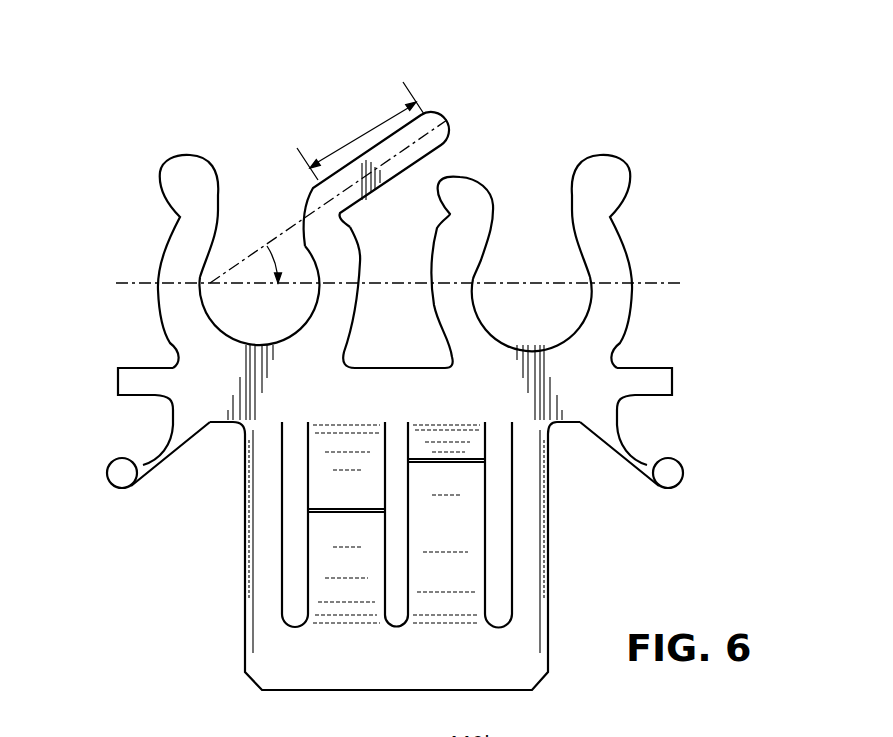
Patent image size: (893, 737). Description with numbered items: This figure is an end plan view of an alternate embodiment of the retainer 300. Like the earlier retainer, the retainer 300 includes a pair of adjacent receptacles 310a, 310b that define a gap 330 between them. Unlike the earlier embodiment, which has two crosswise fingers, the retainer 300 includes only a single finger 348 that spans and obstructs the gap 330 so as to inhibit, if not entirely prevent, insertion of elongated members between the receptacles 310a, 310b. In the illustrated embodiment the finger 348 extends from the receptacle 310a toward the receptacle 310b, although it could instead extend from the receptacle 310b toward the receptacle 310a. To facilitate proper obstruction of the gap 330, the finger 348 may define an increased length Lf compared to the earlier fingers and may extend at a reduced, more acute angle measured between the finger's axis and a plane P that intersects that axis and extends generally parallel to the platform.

The retainer 300 is at (711, 136).
The receptacle 310a is at (127, 248).
The receptacle 310b is at (670, 308).
The gap 330 is at (412, 338).
The finger 348 is at (442, 109).
The plane P is at (640, 283).
The length Lf is at (360, 131).